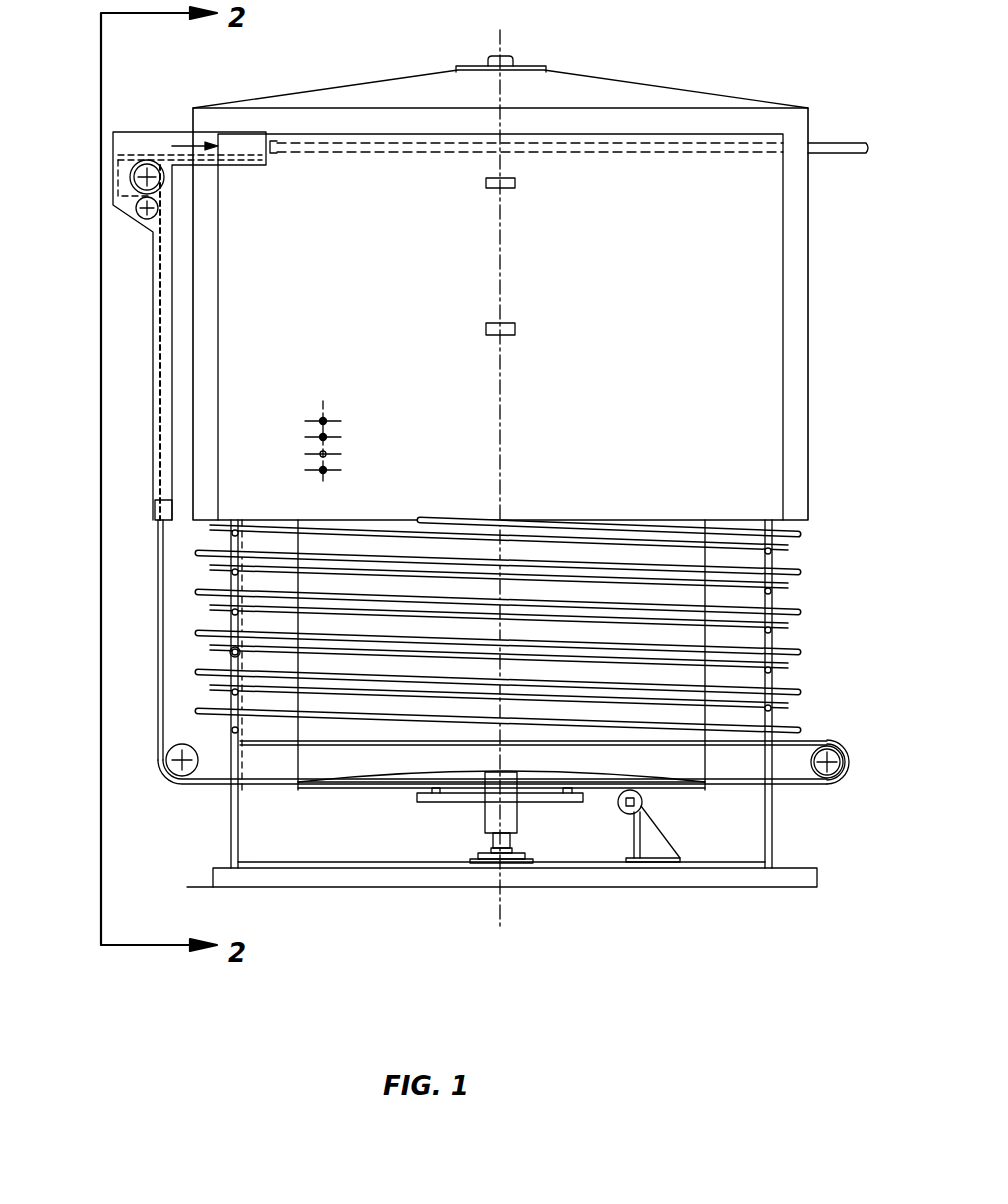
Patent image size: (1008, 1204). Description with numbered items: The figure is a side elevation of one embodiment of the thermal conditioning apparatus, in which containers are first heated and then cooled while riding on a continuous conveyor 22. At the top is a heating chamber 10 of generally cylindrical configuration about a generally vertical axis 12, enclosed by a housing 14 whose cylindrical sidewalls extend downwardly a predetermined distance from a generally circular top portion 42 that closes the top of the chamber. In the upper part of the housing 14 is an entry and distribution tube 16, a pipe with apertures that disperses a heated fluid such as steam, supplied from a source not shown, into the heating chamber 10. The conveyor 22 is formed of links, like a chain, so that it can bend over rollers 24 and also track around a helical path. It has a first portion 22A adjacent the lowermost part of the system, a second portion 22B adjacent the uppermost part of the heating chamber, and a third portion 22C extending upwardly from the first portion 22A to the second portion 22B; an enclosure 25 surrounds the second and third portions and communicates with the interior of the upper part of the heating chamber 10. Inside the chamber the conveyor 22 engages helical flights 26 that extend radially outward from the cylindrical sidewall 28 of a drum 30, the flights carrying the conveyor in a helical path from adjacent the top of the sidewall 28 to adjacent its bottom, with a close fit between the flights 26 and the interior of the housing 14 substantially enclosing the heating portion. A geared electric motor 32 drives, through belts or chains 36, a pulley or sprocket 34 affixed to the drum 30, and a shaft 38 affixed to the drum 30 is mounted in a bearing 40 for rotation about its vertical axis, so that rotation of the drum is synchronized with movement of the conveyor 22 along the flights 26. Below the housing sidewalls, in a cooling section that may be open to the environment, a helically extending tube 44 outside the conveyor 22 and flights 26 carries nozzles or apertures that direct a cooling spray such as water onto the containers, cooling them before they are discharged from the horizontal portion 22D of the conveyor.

The heating chamber 10 is at (822, 358).
The vertical axis 12 is at (500, 40).
The housing 14 is at (730, 218).
The entry and distribution tube 16 is at (655, 142).
The continuous conveyor 22 is at (650, 540).
The first portion of the conveyor 22A is at (215, 782).
The second portion of the conveyor 22B is at (166, 157).
The third portion of the conveyor 22C is at (160, 680).
The horizontal portion of the conveyor 22D is at (807, 740).
The rollers 24 is at (162, 180).
The enclosure 25 is at (153, 313).
The helical flights 26 is at (232, 580).
The cylindrical sidewall 28 is at (232, 545).
The drum 30 is at (358, 757).
The geared electric motor 32 is at (647, 793).
The pulley or sprocket 34 is at (533, 798).
The belts or chains 36 is at (633, 815).
The shaft 38 is at (485, 812).
The bearing 40 is at (477, 856).
The top portion 42 is at (338, 85).
The helically extending tube 44 is at (200, 594).